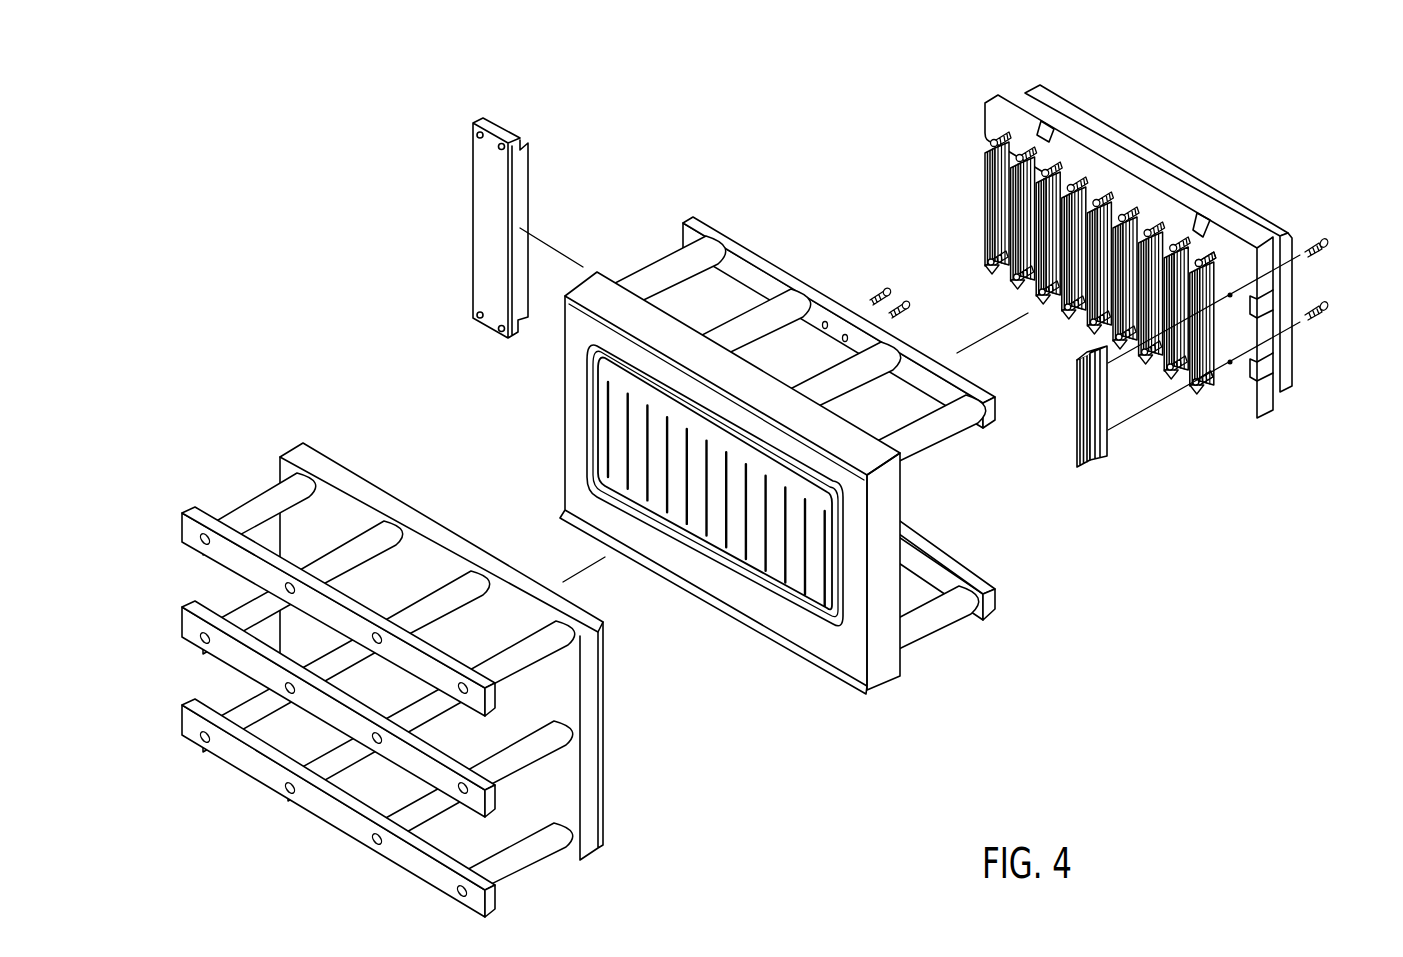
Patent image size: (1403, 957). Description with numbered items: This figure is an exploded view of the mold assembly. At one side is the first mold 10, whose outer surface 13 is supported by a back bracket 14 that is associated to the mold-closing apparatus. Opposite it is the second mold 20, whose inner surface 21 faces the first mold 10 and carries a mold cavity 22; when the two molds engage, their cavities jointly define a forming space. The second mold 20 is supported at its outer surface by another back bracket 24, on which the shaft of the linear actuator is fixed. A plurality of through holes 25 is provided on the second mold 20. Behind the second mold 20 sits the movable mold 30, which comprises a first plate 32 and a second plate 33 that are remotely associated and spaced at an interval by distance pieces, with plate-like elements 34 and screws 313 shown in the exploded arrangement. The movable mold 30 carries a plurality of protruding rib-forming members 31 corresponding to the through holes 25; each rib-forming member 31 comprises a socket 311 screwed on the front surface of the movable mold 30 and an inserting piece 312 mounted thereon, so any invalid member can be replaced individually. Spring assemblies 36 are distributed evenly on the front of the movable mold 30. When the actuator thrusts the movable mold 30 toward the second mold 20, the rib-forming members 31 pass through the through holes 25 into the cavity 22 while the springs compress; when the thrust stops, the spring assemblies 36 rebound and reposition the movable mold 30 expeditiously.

The first mold 10 is at (294, 444).
The outer surface 13 is at (303, 505).
The back bracket 14 is at (143, 513).
The second mold 20 is at (767, 406).
The inner surface 21 is at (573, 357).
The mold cavity 22 is at (583, 412).
The back bracket 24 is at (1014, 397).
The through holes 25 is at (622, 454).
The movable mold 30 is at (1194, 270).
The rib-forming members 31 is at (1111, 326).
The socket 311 is at (1102, 447).
The inserting piece 312 is at (1082, 468).
The screws 313 is at (1328, 241).
The first plate 32 is at (1270, 405).
The second plate 33 is at (1288, 366).
The top bar 34 is at (1257, 234).
The spring assemblies 36 is at (1216, 241).